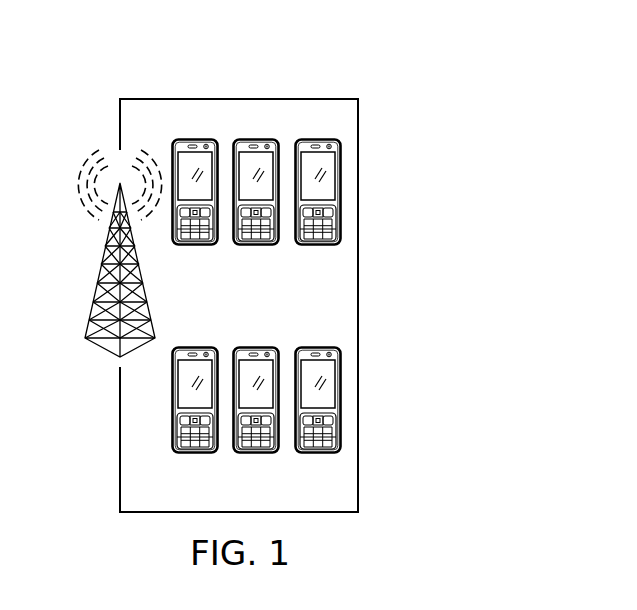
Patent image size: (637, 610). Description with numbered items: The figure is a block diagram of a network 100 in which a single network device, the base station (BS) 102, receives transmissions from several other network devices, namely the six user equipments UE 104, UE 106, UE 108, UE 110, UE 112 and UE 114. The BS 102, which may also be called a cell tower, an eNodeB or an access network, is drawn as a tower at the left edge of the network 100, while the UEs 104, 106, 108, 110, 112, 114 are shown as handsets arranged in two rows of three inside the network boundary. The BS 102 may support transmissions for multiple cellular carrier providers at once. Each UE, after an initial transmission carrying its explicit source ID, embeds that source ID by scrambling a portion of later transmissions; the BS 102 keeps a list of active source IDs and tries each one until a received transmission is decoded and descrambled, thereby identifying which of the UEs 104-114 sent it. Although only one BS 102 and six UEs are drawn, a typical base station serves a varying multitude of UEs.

The network 100 is at (398, 77).
The base station (BS) 102 is at (101, 259).
The UE 104 is at (193, 246).
The UE 106 is at (256, 246).
The UE 108 is at (319, 246).
The UE 110 is at (193, 454).
The UE 112 is at (256, 454).
The UE 114 is at (319, 454).